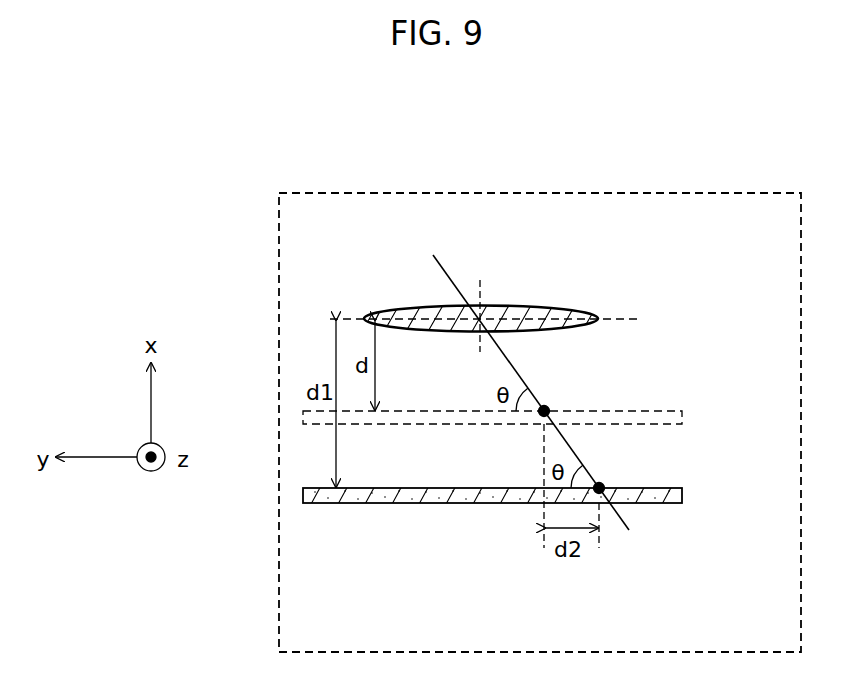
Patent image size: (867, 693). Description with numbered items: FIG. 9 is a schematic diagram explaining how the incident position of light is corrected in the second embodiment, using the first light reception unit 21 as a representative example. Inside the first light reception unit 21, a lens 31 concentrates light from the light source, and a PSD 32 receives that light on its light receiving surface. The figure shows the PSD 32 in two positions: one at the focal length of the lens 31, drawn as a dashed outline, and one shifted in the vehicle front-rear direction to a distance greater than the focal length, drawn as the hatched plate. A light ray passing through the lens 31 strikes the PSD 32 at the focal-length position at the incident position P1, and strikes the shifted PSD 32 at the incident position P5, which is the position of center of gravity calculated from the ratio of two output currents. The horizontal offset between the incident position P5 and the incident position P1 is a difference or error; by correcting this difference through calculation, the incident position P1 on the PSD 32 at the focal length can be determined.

The first light reception unit 21 is at (733, 192).
The lens 31 is at (596, 311).
The PSD 32 is at (684, 418).
The incident position P1 is at (547, 407).
The incident position (position of center of gravity) P5 is at (603, 486).